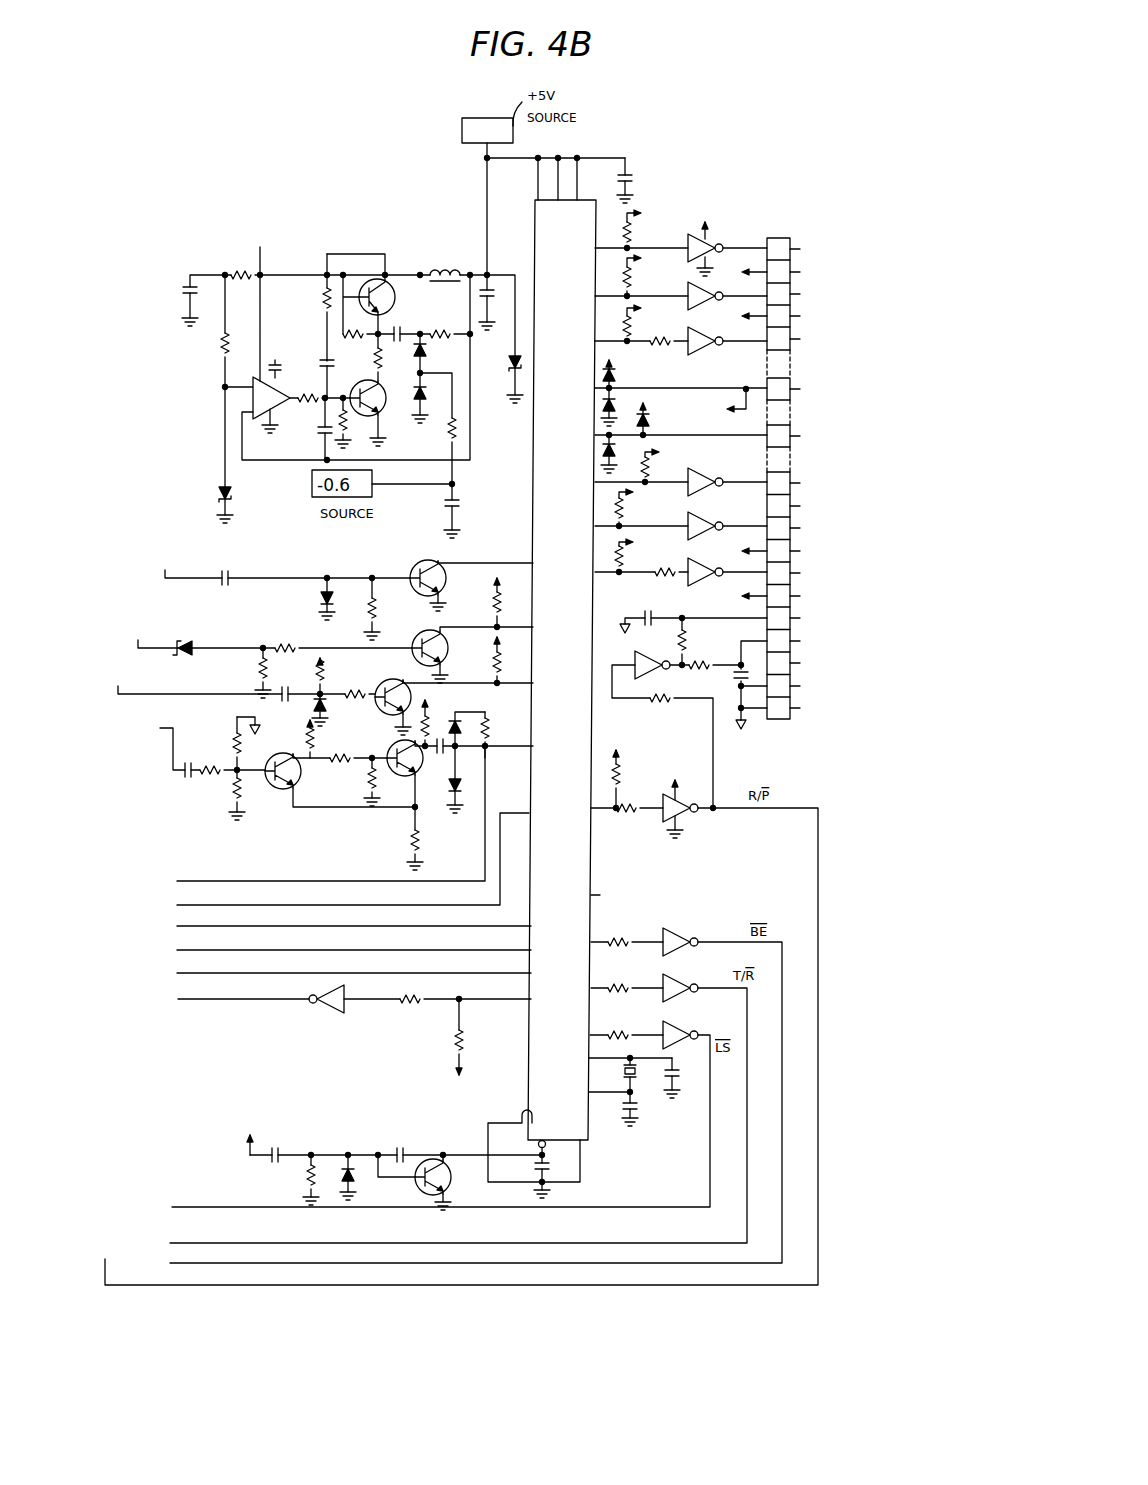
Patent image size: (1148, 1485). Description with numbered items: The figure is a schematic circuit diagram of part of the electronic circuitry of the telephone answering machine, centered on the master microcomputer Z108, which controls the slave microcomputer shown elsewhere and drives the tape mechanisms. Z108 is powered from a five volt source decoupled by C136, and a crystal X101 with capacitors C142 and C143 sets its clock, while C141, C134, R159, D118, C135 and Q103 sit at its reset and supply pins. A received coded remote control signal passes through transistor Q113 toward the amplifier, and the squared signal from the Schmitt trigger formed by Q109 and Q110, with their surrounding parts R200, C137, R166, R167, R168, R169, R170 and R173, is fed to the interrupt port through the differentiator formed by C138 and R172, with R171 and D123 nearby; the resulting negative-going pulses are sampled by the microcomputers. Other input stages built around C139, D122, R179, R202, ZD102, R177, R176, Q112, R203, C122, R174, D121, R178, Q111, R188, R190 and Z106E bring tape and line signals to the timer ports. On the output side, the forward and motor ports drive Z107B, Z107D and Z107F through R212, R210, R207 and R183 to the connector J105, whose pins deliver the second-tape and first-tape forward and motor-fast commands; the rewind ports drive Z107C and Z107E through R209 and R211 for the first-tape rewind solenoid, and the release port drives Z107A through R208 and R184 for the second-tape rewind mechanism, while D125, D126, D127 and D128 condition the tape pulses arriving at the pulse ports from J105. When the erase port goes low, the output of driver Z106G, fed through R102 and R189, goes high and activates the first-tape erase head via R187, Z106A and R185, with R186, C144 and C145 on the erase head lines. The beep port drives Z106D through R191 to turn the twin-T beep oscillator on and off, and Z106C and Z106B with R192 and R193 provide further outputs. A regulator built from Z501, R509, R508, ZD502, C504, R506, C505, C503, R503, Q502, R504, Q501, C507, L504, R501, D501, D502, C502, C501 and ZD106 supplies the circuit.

The capacitor C136 is at (642, 180).
The master microcomputer Z108 is at (562, 671).
The connector J105 is at (820, 469).
The resistor R212 is at (644, 227).
The inverter Z107B is at (726, 238).
The resistor R210 is at (644, 274).
The inverter Z107D is at (727, 294).
The resistor R207 is at (644, 323).
The resistor R183 is at (660, 351).
The inverter Z107F is at (714, 348).
The diode D125 is at (629, 374).
The diode D126 is at (614, 407).
The diode D127 is at (662, 419).
The diode D128 is at (614, 455).
The resistor R209 is at (662, 465).
The inverter Z107C is at (715, 477).
The resistor R211 is at (637, 507).
The inverter Z107E is at (724, 523).
The resistor R208 is at (637, 555).
The resistor R184 is at (674, 568).
The inverter Z107A is at (677, 578).
The capacitor C145 is at (670, 611).
The resistor R185 is at (701, 641).
The driver Z106A is at (659, 674).
The resistor R186 is at (711, 657).
The capacitor C144 is at (737, 688).
The resistor R187 is at (662, 707).
The resistor R102 is at (635, 774).
The resistor R189 is at (632, 820).
The driver Z106G is at (696, 803).
The resistor R191 is at (625, 933).
The inverter Z106D is at (694, 937).
The resistor R192 is at (625, 979).
The inverter Z106C is at (694, 983).
The resistor R193 is at (625, 1026).
The inverter Z106B is at (694, 1030).
The crystal X101 is at (614, 1075).
The capacitor C142 is at (618, 1113).
The capacitor C143 is at (665, 1080).
The capacitor C141 is at (552, 1167).
The capacitor C134 is at (275, 1146).
The resistor R159 is at (287, 1180).
The diode D118 is at (347, 1166).
The capacitor C135 is at (400, 1146).
The transistor Q103 is at (443, 1173).
The inverter Z106E is at (351, 1008).
The resistor R190 is at (427, 991).
The resistor R188 is at (477, 1037).
The capacitor C139 is at (235, 569).
The diode D122 is at (320, 600).
The resistor R179 is at (388, 609).
The transistor Q113 is at (426, 563).
The resistor R202 is at (478, 602).
The zener diode ZD102 is at (201, 636).
The resistor R177 is at (294, 638).
The resistor R176 is at (241, 673).
The transistor Q112 is at (412, 656).
The resistor R203 is at (478, 660).
The capacitor C122 is at (293, 684).
The resistor R174 is at (342, 676).
The diode D121 is at (312, 706).
The resistor R178 is at (357, 705).
The transistor Q111 is at (389, 716).
The resistor R200 is at (216, 743).
The capacitor C137 is at (182, 778).
The resistor R166 is at (210, 778).
The resistor R167 is at (240, 800).
The Schmitt trigger transistor Q109 is at (294, 755).
The resistor R168 is at (328, 739).
The resistor R169 is at (339, 770).
The resistor R170 is at (368, 792).
The Schmitt trigger transistor Q110 is at (405, 758).
The resistor R173 is at (410, 840).
The resistor R171 is at (432, 715).
The differentiator capacitor C138 is at (440, 755).
The diode D123 is at (462, 785).
The differentiator resistor R172 is at (503, 729).
The resistor R509 is at (243, 265).
The resistor R508 is at (204, 331).
The zener diode ZD502 is at (249, 455).
The operational amplifier Z501 is at (250, 400).
The capacitor C504 is at (280, 358).
The resistor R506 is at (300, 307).
The capacitor C505 is at (342, 371).
The capacitor C503 is at (322, 440).
The resistor R503 is at (346, 432).
The transistor Q502 is at (385, 418).
The resistor R504 is at (359, 357).
The transistor Q501 is at (376, 278).
The capacitor C507 is at (398, 326).
The inductor L504 is at (442, 263).
The resistor R501 is at (444, 324).
The diode D501 is at (439, 353).
The diode D502 is at (420, 400).
The capacitor C502 is at (470, 511).
The capacitor C501 is at (501, 291).
The zener diode ZD106 is at (512, 376).